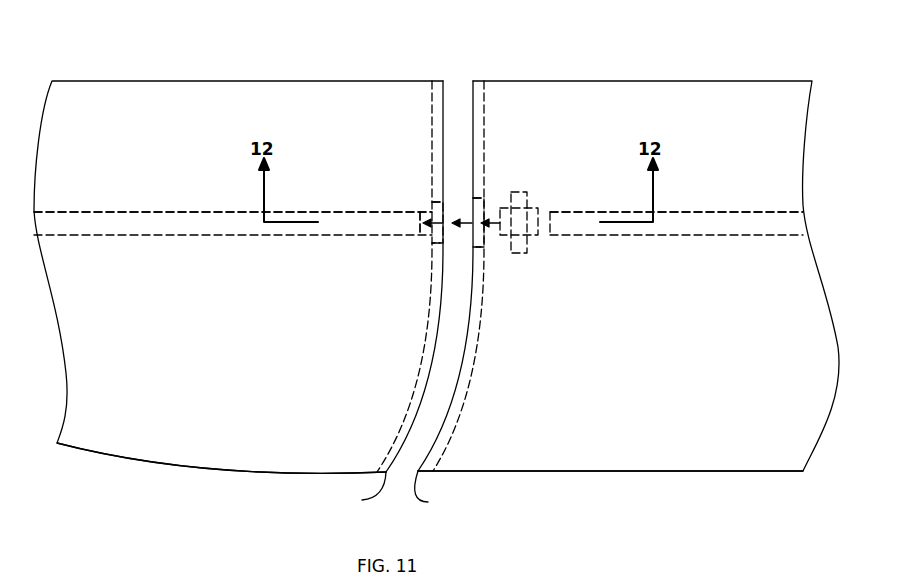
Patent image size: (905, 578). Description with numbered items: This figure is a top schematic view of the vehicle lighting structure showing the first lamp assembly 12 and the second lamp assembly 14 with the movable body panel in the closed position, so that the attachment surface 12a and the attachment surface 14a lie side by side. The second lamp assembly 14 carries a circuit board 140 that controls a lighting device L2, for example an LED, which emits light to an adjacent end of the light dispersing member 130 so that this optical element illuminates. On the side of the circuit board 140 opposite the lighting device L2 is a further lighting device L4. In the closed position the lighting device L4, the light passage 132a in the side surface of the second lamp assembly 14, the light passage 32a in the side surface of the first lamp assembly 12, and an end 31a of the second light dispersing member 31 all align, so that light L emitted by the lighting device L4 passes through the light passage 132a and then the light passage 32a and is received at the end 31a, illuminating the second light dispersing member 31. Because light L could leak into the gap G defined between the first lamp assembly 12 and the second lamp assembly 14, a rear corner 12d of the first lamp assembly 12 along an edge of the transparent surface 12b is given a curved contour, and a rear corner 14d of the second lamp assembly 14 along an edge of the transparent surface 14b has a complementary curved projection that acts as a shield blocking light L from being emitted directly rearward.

The first lamp assembly 12 is at (193, 81).
The second lamp assembly 14 is at (602, 81).
The attachment surface 12a is at (433, 360).
The attachment surface 14a is at (450, 399).
The transparent surface 12b is at (143, 462).
The transparent surface 14b is at (650, 471).
The rear corner 12d is at (355, 493).
The rear corner 14d is at (439, 492).
The second light dispersing member 31 is at (143, 223).
The light dispersing member 130 is at (735, 224).
The end 31a is at (427, 218).
The light passage 32a is at (437, 238).
The light passage 132a is at (478, 240).
The circuit board 140 is at (521, 194).
The light L is at (438, 220).
The lighting device L4 is at (506, 204).
The lighting device L2 is at (535, 243).
The gap G is at (385, 415).